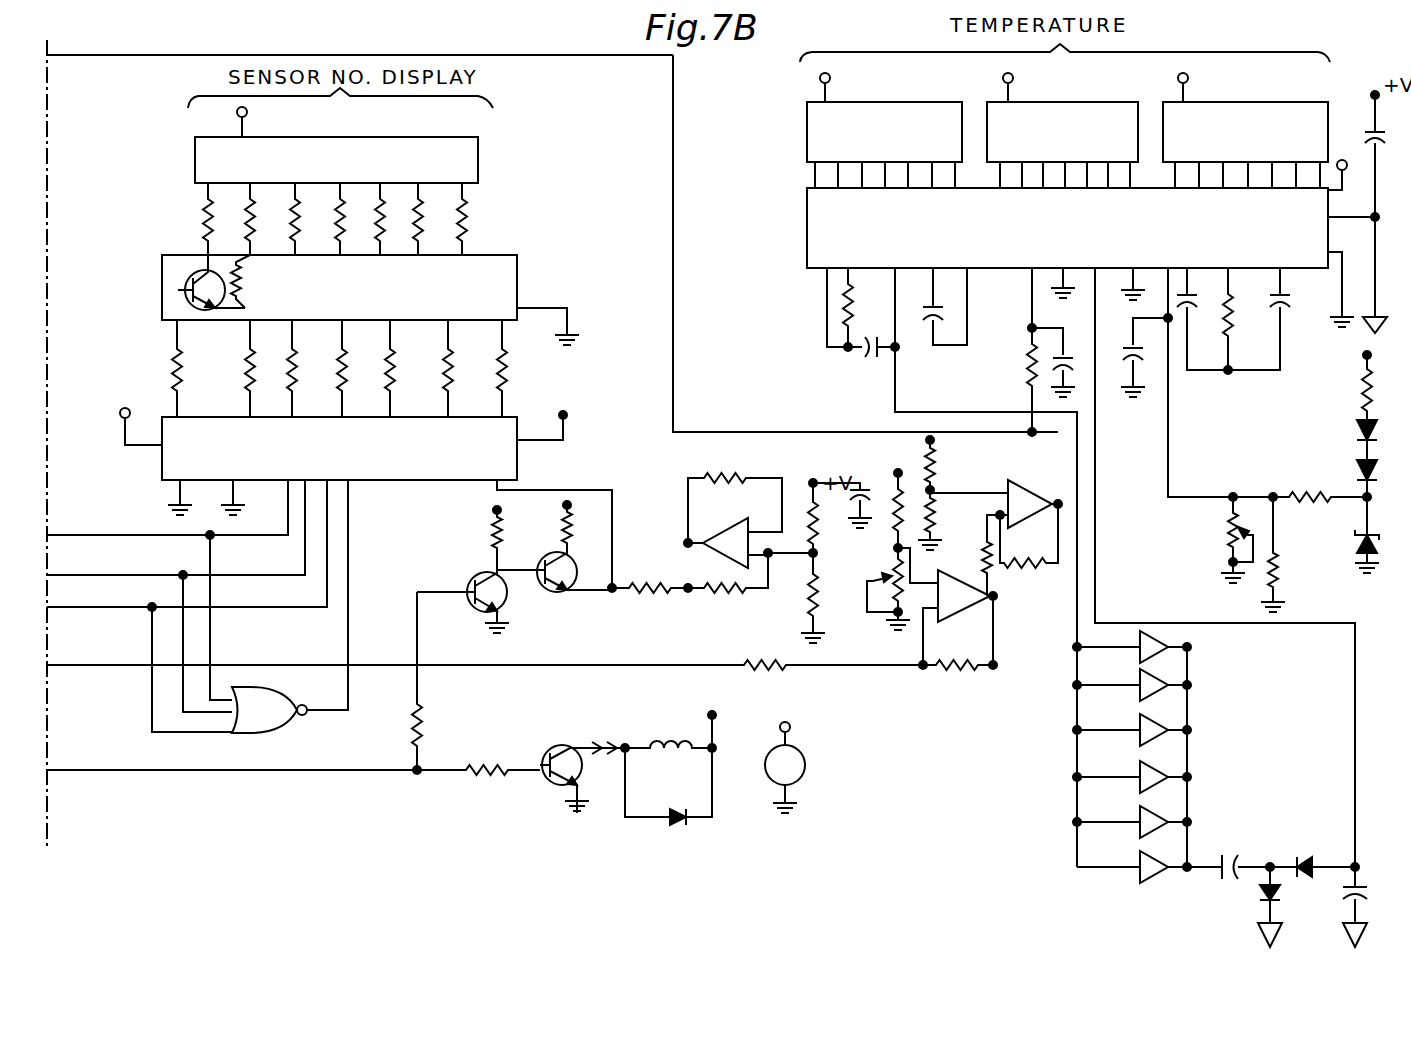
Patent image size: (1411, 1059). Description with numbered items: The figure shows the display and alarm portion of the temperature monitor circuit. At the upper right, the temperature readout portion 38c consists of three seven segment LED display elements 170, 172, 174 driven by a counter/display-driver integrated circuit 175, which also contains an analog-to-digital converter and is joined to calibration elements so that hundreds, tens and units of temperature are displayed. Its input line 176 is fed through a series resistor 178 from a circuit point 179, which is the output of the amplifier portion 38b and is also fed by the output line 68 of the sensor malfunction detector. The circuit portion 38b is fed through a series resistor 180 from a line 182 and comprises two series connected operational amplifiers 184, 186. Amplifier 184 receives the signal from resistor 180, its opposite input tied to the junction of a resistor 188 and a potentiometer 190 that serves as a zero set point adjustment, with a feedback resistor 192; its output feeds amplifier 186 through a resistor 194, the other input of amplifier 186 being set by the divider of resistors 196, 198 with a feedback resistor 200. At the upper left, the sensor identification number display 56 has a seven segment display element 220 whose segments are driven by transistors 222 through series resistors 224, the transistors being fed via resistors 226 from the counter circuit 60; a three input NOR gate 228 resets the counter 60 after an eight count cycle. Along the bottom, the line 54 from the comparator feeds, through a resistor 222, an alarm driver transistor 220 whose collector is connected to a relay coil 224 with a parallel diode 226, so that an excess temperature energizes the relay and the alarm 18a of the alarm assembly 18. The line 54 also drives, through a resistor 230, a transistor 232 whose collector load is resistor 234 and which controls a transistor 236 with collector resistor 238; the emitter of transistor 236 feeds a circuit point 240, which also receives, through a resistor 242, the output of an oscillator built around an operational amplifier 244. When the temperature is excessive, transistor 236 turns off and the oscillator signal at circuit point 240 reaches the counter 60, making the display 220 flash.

The alarm 18 is at (706, 826).
The alarm 18a is at (806, 766).
The temperature readout and display circuit portion 38b is at (993, 672).
The temperature readout and display portion 38c is at (800, 178).
The line 54 is at (250, 770).
The sensor identification number display 56 is at (553, 170).
The counter circuit 60 is at (364, 463).
The output line 68 is at (676, 428).
The seven segment LED display element 170 is at (912, 145).
The seven segment LED display element 172 is at (1090, 145).
The seven segment LED display element 174 is at (1275, 145).
The counter/display-driver integrated circuit 175 is at (1095, 240).
The input line 176 is at (1032, 320).
The series resistor 178 is at (1024, 366).
The circuit point 179 is at (1000, 468).
The series resistor 180 is at (764, 649).
The line 182 is at (588, 665).
The operational amplifier 184 is at (962, 600).
The operational amplifier 186 is at (1044, 510).
The resistor 188 is at (895, 514).
The potentiometer 190 is at (867, 594).
The feedback resistor 192 is at (958, 620).
The series connected resistor 194 is at (984, 560).
The resistor 196 is at (960, 461).
The resistor 198 is at (956, 520).
The feedback resistor 200 is at (1027, 552).
The seven segment LED digital display element 220 is at (360, 175).
The transistor 222 is at (170, 286).
The series connected resistor 224 is at (200, 217).
The resistor 226 is at (430, 572).
The three input NOR gate 228 is at (269, 710).
The series connected resistor 230 is at (446, 681).
The transistor 232 is at (470, 586).
The resistor 234 is at (490, 533).
The transistor 236 is at (570, 589).
The series resistor 238 is at (578, 535).
The circuit point 240 is at (630, 584).
The series connected resistor 242 is at (716, 586).
The operational amplifier 244 is at (733, 520).